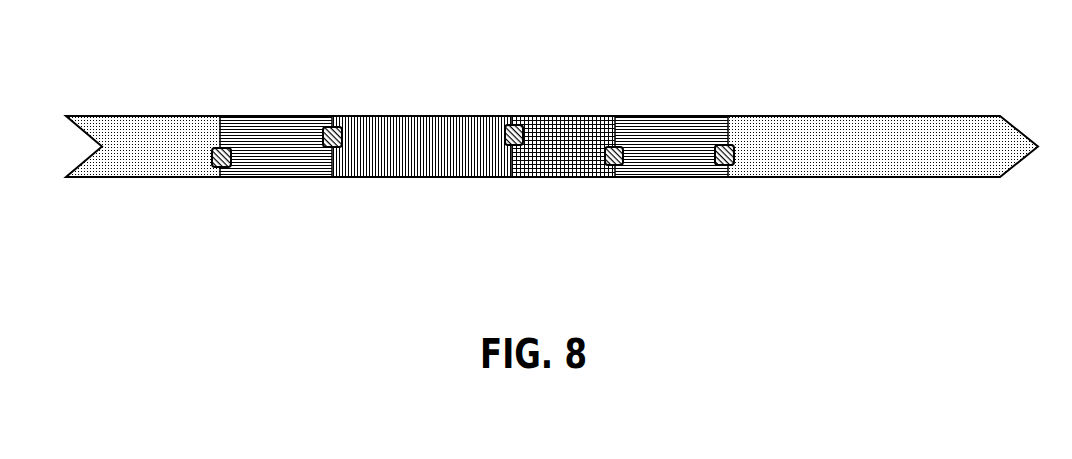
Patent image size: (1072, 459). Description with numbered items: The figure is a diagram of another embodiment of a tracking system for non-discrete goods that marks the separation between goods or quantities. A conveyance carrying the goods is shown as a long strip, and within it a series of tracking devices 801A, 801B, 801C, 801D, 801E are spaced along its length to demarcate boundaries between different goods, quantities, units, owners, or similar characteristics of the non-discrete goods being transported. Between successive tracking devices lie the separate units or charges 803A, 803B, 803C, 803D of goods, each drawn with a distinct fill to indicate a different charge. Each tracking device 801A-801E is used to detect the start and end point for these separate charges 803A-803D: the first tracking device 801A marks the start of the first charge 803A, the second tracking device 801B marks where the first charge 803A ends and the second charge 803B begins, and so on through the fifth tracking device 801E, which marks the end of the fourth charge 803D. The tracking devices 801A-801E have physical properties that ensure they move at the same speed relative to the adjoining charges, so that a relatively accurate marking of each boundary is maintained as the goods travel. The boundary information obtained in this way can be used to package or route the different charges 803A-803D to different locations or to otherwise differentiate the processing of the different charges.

The tracking device 801A is at (224, 147).
The tracking device 801B is at (333, 127).
The tracking device 801C is at (514, 125).
The tracking device 801D is at (616, 147).
The tracking device 801E is at (728, 145).
The charge 803A is at (263, 163).
The charge 803B is at (445, 163).
The charge 803C is at (558, 163).
The charge 803D is at (673, 163).